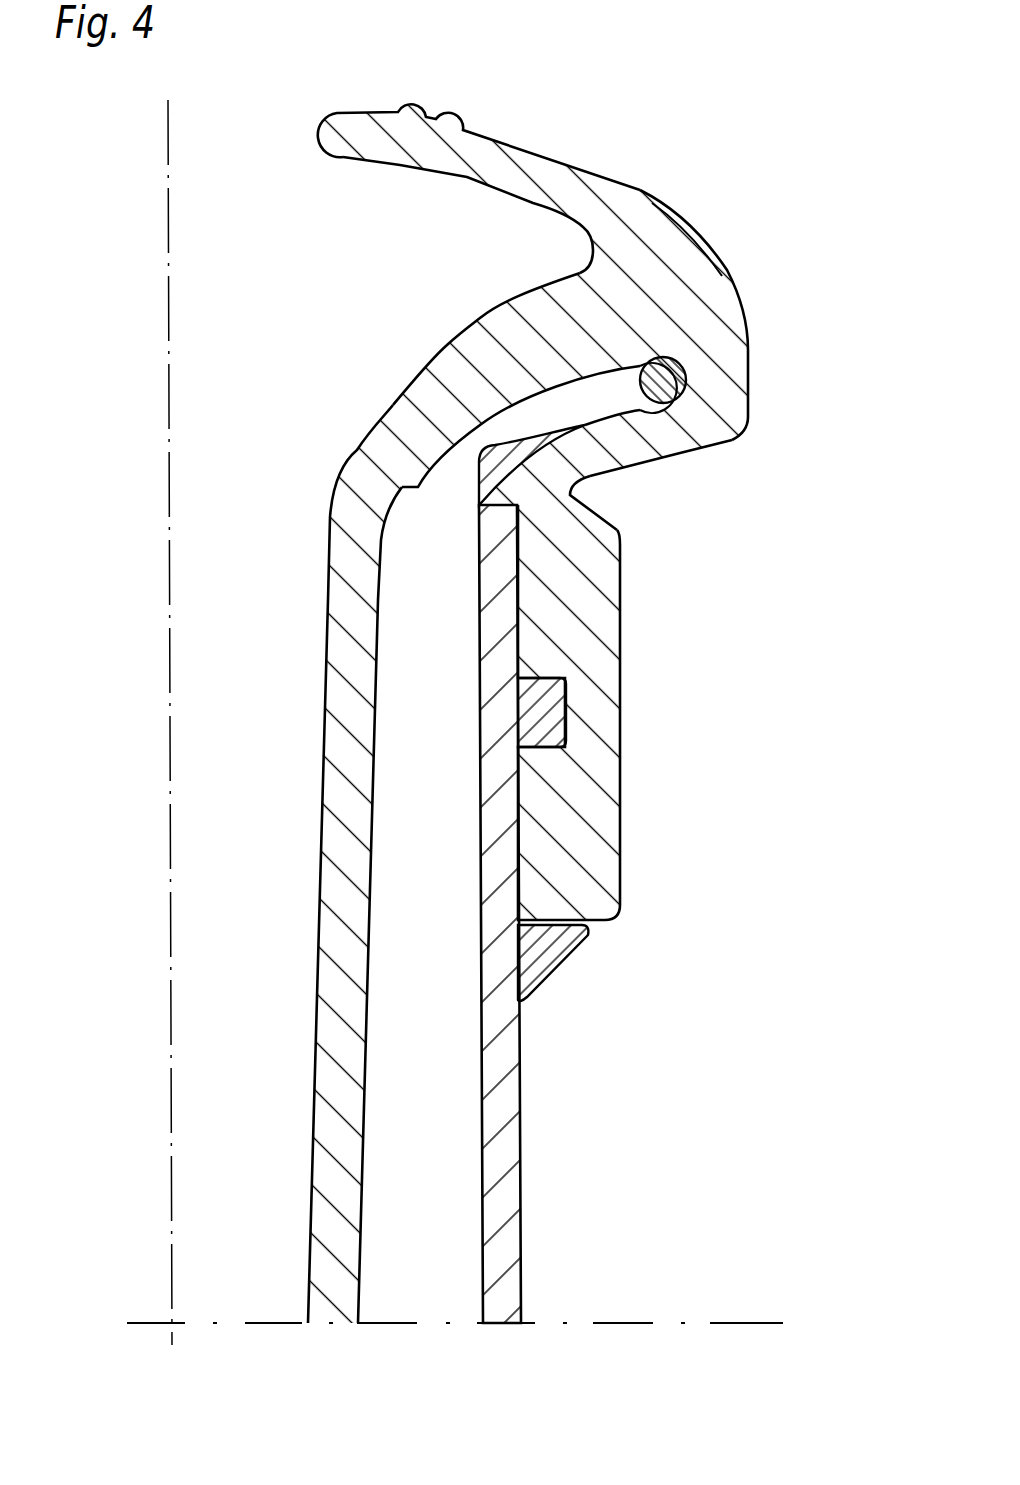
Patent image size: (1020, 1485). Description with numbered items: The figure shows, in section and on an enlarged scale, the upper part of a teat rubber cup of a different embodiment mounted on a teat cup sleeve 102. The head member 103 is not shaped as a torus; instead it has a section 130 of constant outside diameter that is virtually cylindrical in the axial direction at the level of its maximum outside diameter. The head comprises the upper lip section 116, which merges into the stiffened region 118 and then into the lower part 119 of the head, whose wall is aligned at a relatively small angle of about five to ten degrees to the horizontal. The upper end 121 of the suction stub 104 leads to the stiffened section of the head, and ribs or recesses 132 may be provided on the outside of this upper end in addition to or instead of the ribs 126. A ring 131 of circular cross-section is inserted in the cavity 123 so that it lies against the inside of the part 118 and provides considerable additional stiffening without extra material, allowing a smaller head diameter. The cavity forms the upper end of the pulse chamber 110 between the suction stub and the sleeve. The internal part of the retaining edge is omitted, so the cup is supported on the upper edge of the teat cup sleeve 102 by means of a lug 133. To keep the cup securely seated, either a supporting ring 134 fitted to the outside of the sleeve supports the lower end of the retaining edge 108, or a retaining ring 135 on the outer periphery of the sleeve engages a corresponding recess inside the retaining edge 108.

The teat cup sleeve 102 is at (508, 1142).
The head member 103 is at (708, 177).
The suction stub 104 is at (348, 1033).
The retaining edge 108 is at (600, 622).
The pulse chamber 110 is at (450, 903).
The upper lip section 116 is at (538, 162).
The stiffened region 118 is at (727, 380).
The lower part of the head 119 is at (673, 457).
The upper end of the suction stub 121 is at (567, 318).
The cavity 123 is at (595, 426).
The ribs 126 is at (490, 467).
The section of constant outside diameter 130 is at (749, 342).
The ring 131 is at (690, 393).
The ribs or recesses 132 is at (453, 440).
The lug 133 is at (520, 480).
The supporting ring 134 is at (540, 960).
The retaining ring 135 is at (545, 690).